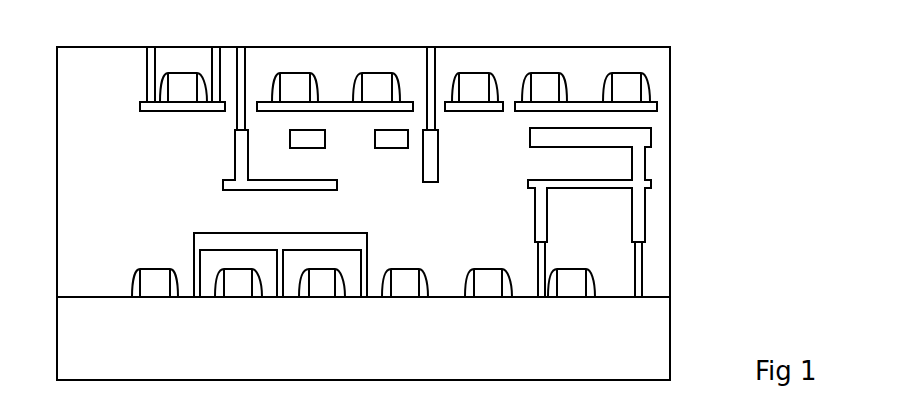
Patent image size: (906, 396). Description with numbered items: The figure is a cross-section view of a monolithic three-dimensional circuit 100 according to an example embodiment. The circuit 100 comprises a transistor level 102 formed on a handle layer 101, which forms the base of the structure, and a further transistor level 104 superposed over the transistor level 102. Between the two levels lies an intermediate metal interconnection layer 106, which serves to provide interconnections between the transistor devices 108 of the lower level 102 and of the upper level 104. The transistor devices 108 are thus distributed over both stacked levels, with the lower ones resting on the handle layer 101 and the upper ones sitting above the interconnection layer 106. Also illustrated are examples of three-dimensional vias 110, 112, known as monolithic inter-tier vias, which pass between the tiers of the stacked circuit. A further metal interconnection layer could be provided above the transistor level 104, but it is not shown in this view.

The monolithic 3D circuit 100 is at (733, 55).
The handle layer 101 is at (653, 331).
The transistor level 102 is at (687, 232).
The further transistor level 104 is at (687, 47).
The intermediate metal interconnection layer 106 is at (687, 128).
The transistor devices 108 is at (378, 80).
The 3D via 110 is at (242, 157).
The 3D via 112 is at (430, 156).